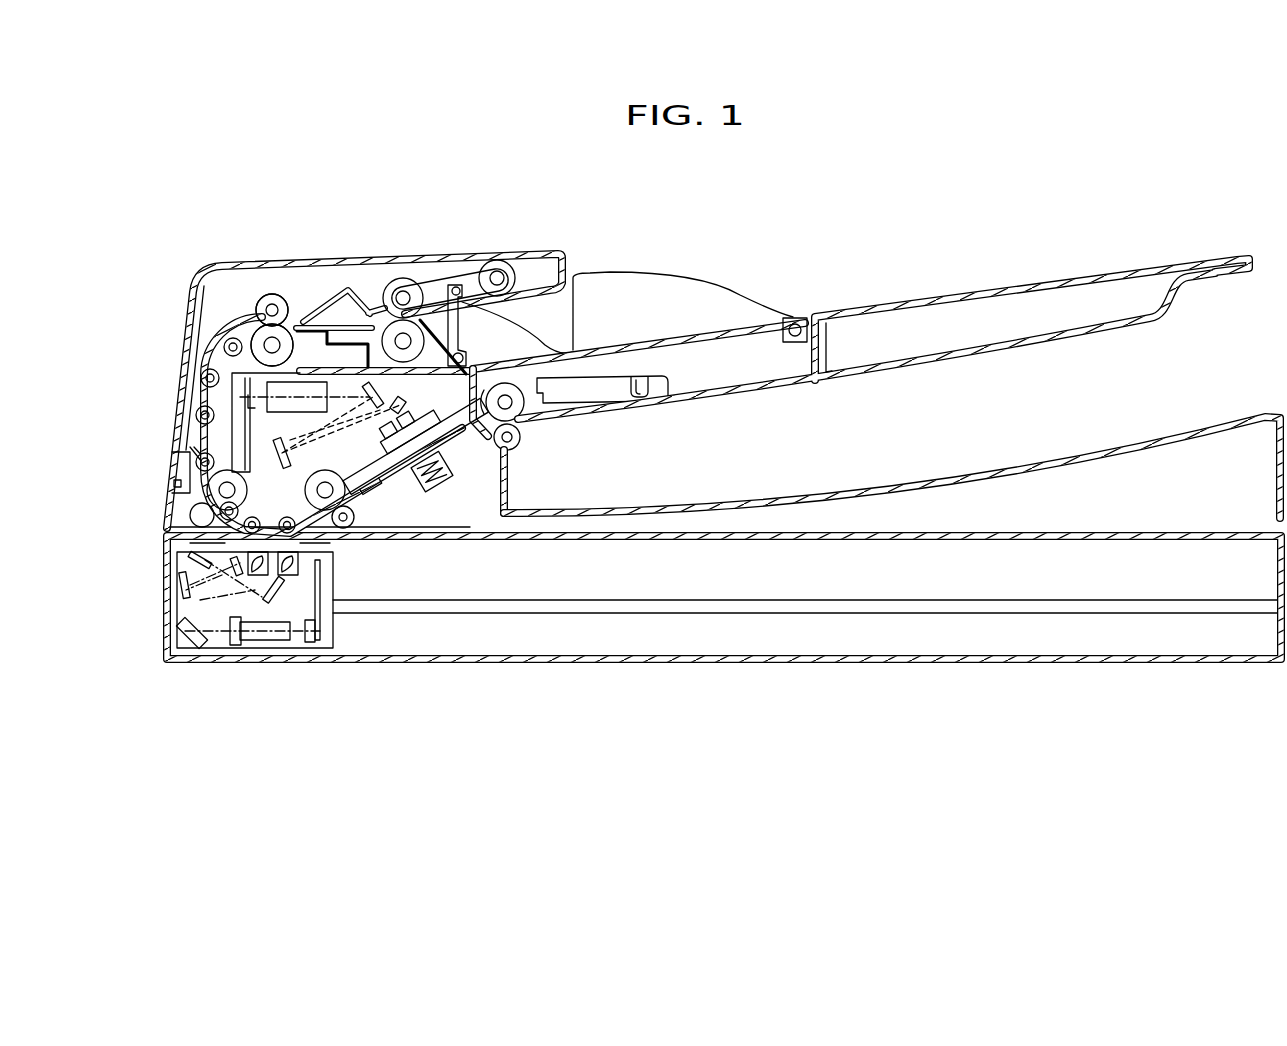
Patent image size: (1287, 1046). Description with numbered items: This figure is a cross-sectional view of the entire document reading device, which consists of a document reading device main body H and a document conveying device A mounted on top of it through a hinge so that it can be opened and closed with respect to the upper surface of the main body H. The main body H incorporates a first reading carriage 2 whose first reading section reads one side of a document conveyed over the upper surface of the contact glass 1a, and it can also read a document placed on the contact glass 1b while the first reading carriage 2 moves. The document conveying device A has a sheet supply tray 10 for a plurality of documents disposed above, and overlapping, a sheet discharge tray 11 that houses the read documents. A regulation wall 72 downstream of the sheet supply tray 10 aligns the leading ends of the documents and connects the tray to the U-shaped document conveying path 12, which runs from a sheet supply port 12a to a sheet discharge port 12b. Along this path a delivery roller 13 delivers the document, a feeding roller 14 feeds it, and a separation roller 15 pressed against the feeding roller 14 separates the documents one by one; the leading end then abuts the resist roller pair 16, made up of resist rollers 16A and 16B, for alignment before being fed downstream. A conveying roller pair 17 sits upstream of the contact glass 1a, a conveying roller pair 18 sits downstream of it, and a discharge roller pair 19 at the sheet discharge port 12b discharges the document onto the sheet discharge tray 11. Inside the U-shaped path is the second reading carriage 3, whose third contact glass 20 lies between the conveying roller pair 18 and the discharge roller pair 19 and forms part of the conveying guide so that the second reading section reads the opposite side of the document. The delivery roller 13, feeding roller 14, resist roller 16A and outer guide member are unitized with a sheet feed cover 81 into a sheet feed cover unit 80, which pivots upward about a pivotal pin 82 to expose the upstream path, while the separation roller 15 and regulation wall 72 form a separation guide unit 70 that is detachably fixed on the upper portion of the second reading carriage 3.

The contact glass 1a is at (237, 540).
The contact glass 1b is at (743, 540).
The first reading carriage 2 is at (176, 590).
The second reading carriage 3 is at (221, 394).
The sheet supply tray 10 is at (740, 323).
The sheet discharge tray 11 is at (910, 475).
The document conveying path 12 is at (212, 344).
The sheet supply port 12a is at (512, 333).
The sheet discharge port 12b is at (540, 432).
The delivery roller 13 is at (492, 261).
The feeding roller 14 is at (402, 278).
The separation roller 15 is at (384, 330).
The resist roller pair 16 is at (295, 153).
The resist roller 16A is at (268, 294).
The resist roller 16B is at (252, 330).
The conveying roller pair 17 is at (190, 518).
The conveying roller pair 18 is at (343, 540).
The discharge roller pair 19 is at (505, 450).
The third contact glass 20 is at (393, 480).
The separation guide unit 70 is at (357, 318).
The regulation wall 72 is at (543, 352).
The sheet feed cover unit 80 is at (180, 269).
The sheet feed cover 81 is at (205, 260).
The pivotal pin 82 is at (170, 482).
The document conveying device A is at (1092, 212).
The document reading device main body H is at (1091, 714).